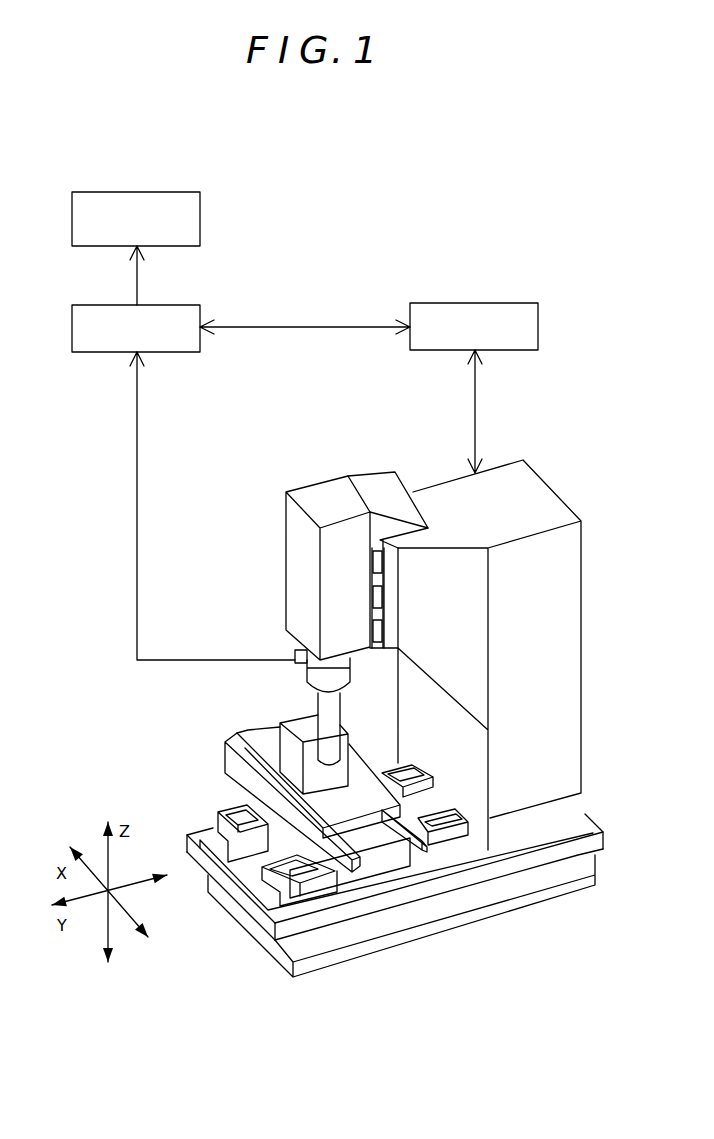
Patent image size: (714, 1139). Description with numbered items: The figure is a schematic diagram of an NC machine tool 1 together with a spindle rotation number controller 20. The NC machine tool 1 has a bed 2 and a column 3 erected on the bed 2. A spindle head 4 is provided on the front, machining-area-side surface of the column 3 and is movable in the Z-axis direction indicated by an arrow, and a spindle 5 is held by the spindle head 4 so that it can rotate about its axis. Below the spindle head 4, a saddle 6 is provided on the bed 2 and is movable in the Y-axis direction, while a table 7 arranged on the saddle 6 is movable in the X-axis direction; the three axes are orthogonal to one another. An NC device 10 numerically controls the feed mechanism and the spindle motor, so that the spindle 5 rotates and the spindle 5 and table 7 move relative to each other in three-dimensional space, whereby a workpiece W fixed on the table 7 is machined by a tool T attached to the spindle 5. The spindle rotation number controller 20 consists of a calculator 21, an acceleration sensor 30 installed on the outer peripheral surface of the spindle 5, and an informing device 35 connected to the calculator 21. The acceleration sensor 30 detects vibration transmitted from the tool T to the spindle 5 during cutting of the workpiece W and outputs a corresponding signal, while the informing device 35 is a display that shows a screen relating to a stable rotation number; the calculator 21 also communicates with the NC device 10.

The NC machine tool 1 is at (640, 471).
The bed 2 is at (478, 905).
The column 3 is at (540, 478).
The spindle head 4 is at (338, 490).
The spindle 5 is at (308, 683).
The saddle 6 is at (397, 877).
The table 7 is at (268, 743).
The NC device 10 is at (476, 303).
The spindle rotation number controller 20 is at (180, 427).
The calculator 21 is at (95, 353).
The acceleration sensor 30 is at (298, 652).
The informing device 35 is at (201, 219).
The tool T is at (340, 718).
The workpiece W is at (292, 758).